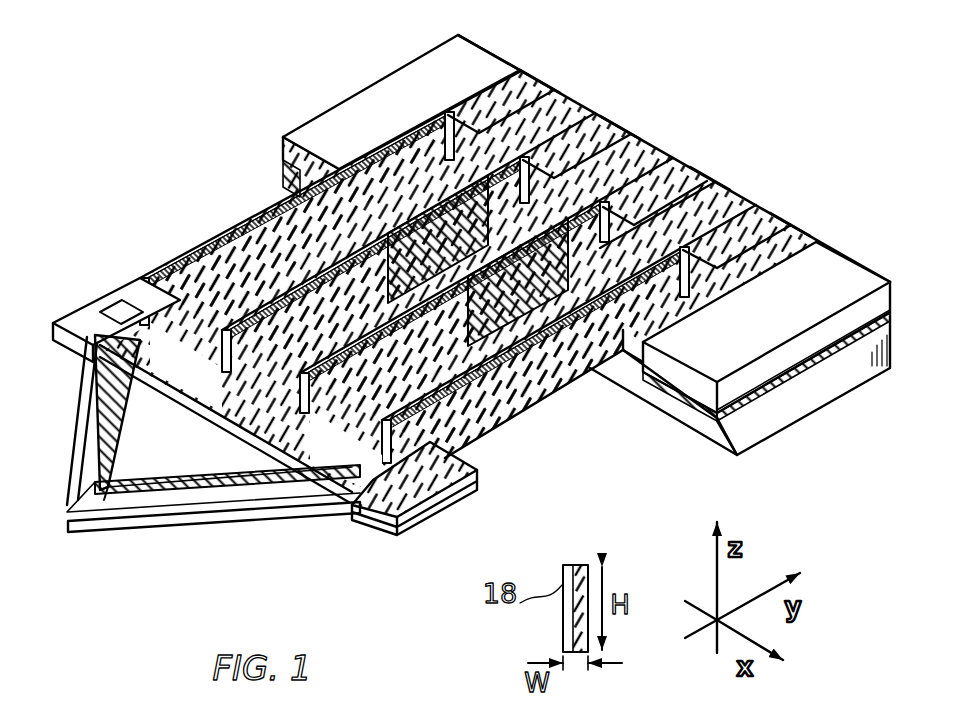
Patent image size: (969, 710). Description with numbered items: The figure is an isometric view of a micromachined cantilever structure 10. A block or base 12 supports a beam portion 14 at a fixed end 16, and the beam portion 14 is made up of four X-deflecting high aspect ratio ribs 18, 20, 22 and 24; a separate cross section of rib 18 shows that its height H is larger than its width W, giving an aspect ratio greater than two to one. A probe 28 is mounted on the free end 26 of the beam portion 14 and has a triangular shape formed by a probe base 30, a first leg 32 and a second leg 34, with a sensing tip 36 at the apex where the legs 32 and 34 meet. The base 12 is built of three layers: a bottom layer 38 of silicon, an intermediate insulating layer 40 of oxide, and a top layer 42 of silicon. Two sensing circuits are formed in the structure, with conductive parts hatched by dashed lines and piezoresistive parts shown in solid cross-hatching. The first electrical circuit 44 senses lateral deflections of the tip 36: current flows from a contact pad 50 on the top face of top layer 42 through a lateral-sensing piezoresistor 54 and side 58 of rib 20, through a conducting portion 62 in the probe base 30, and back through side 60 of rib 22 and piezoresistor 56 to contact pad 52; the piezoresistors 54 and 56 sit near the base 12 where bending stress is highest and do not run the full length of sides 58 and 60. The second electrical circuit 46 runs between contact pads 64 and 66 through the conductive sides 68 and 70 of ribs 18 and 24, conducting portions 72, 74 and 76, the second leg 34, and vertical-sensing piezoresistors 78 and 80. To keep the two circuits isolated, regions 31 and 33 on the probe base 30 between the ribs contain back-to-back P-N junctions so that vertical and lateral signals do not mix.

The micromachined cantilever structure 10 is at (445, 303).
The base 12 is at (740, 435).
The beam portion 14 is at (445, 278).
The fixed end 16 is at (355, 125).
The rib 18 is at (175, 250).
The rib 20 is at (525, 158).
The rib 22 is at (653, 165).
The rib 24 is at (547, 398).
The free end 26 is at (90, 271).
The probe 28 is at (276, 470).
The probe base 30 is at (90, 301).
The region 31 is at (171, 372).
The first leg 32 is at (173, 527).
The region 33 is at (334, 456).
The second leg 34 is at (77, 443).
The sensing tip 36 is at (117, 477).
The bottom layer 38 is at (703, 428).
The intermediate insulating layer 40 is at (780, 384).
The top layer 42 is at (766, 336).
The first electrical circuit 44 is at (674, 249).
The second electrical circuit 46 is at (483, 88).
The contact pad 50 is at (627, 127).
The contact pad 52 is at (710, 180).
The lateral-sensing piezoresistor 54 is at (414, 262).
The lateral-sensing piezoresistor 56 is at (496, 306).
The side 58 is at (316, 316).
The side 60 is at (391, 370).
The conducting portion 62 is at (230, 407).
The contact pad 64 is at (533, 93).
The contact pad 66 is at (786, 230).
The conductive side 68 is at (256, 262).
The conductive side 70 is at (489, 404).
The conducting portion 72 is at (90, 313).
The conducting portion 74 is at (460, 505).
The conducting portion 76 is at (115, 518).
The vertical-sensing piezoresistor 78 is at (92, 384).
The vertical-sensing piezoresistor 80 is at (247, 515).